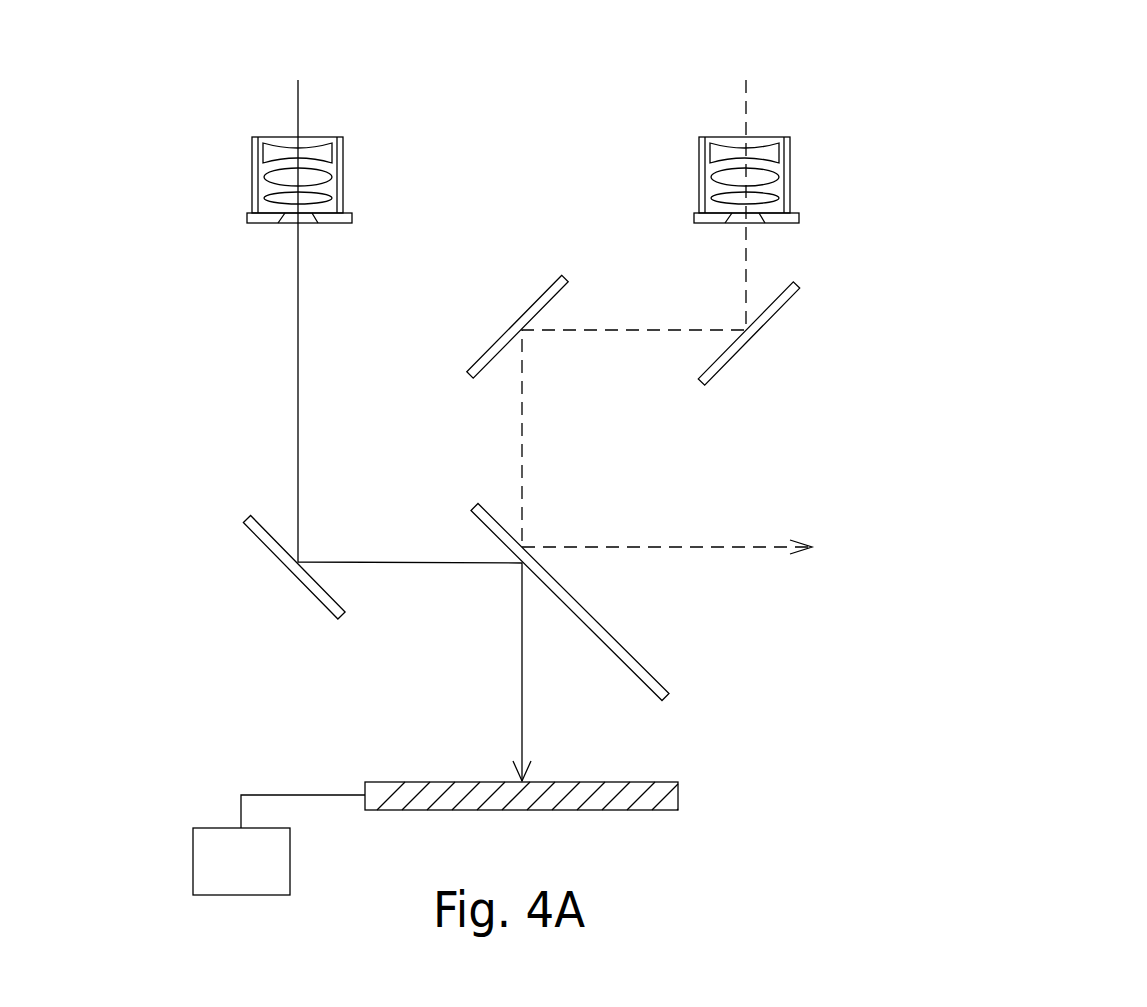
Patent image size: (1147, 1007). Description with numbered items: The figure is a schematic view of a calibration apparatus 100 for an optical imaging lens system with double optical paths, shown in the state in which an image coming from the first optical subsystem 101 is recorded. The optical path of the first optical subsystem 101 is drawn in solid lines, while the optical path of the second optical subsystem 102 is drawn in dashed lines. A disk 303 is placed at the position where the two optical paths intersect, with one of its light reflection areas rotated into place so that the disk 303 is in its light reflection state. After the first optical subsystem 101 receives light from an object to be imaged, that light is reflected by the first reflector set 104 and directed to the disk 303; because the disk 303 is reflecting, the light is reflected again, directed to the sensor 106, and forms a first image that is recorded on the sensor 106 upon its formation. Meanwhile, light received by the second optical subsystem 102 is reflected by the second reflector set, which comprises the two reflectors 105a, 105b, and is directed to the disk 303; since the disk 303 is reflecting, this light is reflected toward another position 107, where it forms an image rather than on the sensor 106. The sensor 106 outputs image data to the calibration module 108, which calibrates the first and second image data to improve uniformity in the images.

The calibration apparatus 100 is at (995, 150).
The first optical subsystem 101 is at (345, 173).
The second optical subsystem 102 is at (791, 173).
The first reflector set 104 is at (290, 573).
The reflector 105a is at (800, 288).
The reflector 105b is at (568, 280).
The sensor 106 is at (678, 795).
The another position 107 is at (812, 547).
The calibration module 108 is at (279, 845).
The disk 303 is at (668, 698).